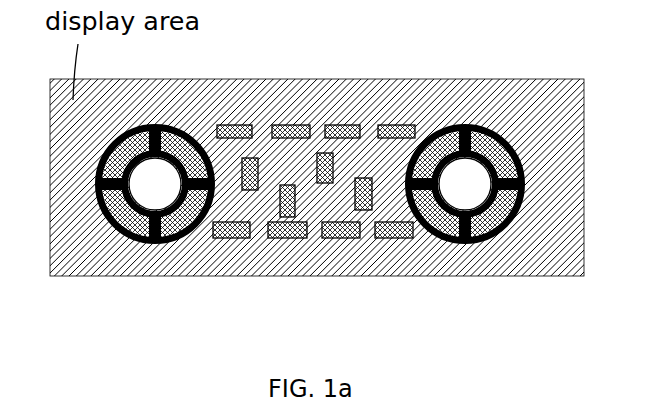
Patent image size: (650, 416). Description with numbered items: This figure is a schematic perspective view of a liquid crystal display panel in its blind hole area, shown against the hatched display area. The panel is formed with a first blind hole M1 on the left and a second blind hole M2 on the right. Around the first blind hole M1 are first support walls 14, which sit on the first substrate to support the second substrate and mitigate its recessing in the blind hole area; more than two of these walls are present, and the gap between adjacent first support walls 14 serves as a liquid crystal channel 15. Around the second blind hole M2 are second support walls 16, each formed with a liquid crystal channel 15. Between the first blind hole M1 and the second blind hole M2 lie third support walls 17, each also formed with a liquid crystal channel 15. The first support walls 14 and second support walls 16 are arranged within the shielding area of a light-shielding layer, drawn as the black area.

The first support walls 14 is at (133, 243).
The liquid crystal channel 15 is at (420, 238).
The second support walls 16 is at (497, 233).
The third support walls 17 is at (328, 125).
The first blind hole M1 is at (155, 180).
The second blind hole M2 is at (471, 182).